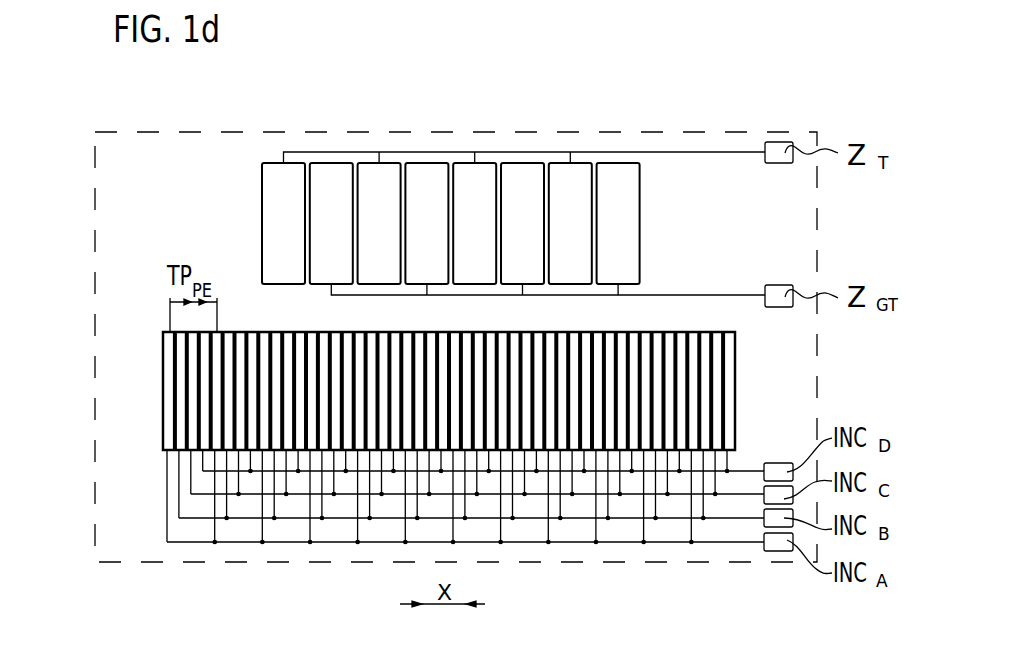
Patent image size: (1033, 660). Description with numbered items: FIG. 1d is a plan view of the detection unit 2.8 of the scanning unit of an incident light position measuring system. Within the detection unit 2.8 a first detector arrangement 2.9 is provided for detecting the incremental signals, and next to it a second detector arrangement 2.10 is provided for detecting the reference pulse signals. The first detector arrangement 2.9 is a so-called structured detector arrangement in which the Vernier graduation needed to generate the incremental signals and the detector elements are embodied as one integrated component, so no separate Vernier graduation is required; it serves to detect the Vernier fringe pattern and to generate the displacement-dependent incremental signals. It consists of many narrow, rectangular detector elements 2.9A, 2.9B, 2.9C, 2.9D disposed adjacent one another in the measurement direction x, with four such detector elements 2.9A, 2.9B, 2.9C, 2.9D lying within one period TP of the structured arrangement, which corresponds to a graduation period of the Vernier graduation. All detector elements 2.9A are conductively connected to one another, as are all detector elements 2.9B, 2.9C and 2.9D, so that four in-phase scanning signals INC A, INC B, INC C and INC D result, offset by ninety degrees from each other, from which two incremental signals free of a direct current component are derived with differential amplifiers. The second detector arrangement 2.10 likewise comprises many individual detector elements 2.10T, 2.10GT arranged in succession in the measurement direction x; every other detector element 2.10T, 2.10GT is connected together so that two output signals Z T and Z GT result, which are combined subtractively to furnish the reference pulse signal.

The detection unit 2.8 is at (566, 562).
The first detector arrangement 2.9 is at (384, 449).
The detector element 2.9A is at (165, 432).
The detector element 2.9B is at (178, 382).
The detector element 2.9C is at (192, 437).
The detector element 2.9D is at (253, 372).
The second detector arrangement 2.10 is at (450, 178).
The detector element 2.10T is at (270, 172).
The detector element 2.10GT is at (338, 170).